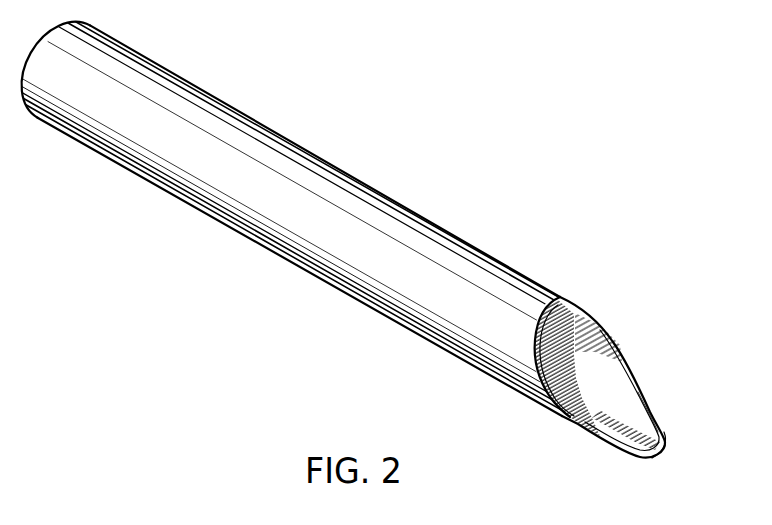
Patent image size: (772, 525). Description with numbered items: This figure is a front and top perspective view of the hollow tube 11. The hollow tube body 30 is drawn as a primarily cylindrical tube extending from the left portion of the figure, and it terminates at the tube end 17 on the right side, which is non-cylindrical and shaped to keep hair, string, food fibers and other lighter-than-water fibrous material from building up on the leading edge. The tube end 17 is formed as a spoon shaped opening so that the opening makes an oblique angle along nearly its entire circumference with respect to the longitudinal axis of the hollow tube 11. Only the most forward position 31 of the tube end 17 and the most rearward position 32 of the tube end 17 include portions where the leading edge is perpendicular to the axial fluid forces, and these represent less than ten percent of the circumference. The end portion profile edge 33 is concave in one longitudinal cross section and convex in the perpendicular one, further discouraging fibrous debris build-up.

The hollow tube 11 is at (356, 260).
The hollow tube body 30 is at (492, 253).
The most rearward position 32 is at (550, 299).
The end portion profile edge 33 is at (636, 396).
The tube end 17 is at (648, 390).
The most forward position 31 is at (656, 460).